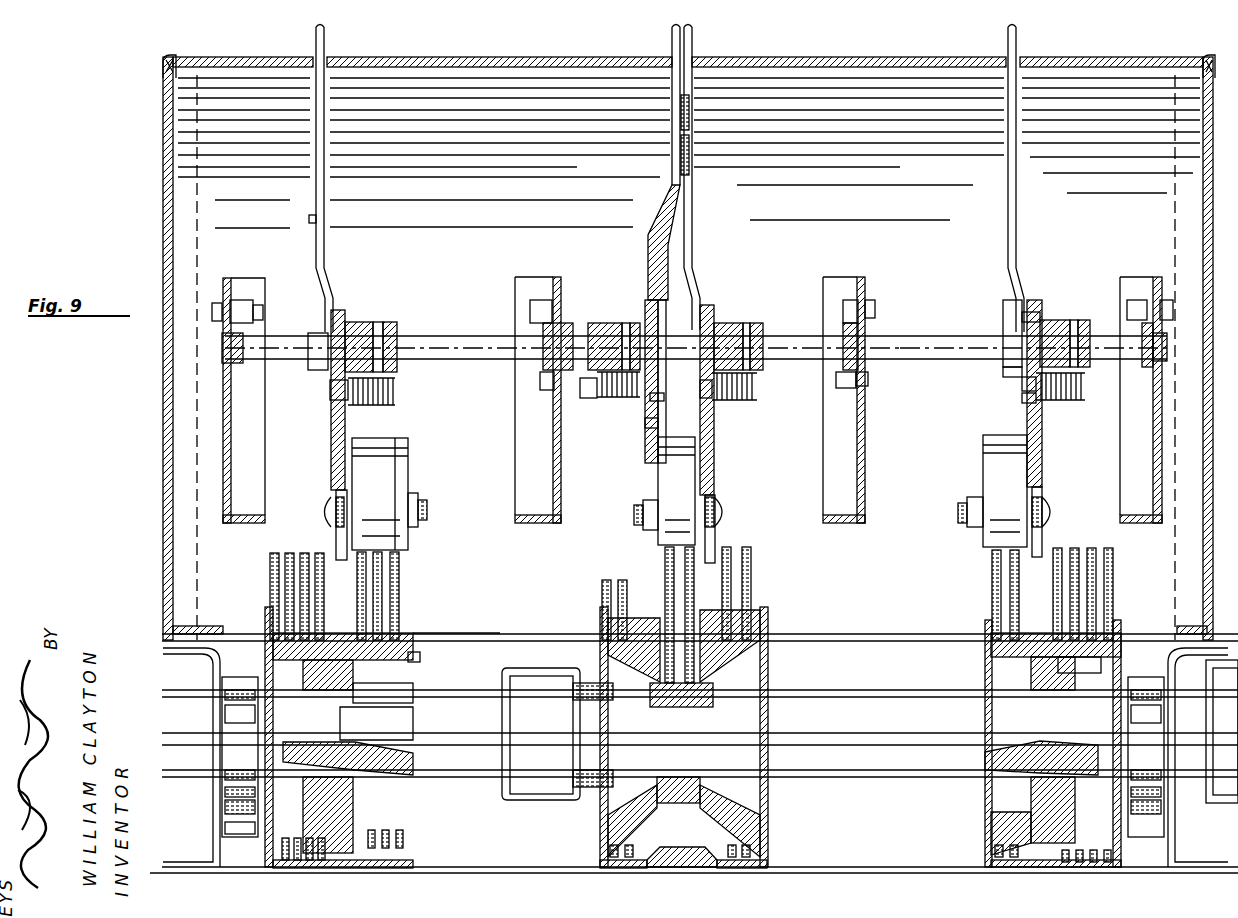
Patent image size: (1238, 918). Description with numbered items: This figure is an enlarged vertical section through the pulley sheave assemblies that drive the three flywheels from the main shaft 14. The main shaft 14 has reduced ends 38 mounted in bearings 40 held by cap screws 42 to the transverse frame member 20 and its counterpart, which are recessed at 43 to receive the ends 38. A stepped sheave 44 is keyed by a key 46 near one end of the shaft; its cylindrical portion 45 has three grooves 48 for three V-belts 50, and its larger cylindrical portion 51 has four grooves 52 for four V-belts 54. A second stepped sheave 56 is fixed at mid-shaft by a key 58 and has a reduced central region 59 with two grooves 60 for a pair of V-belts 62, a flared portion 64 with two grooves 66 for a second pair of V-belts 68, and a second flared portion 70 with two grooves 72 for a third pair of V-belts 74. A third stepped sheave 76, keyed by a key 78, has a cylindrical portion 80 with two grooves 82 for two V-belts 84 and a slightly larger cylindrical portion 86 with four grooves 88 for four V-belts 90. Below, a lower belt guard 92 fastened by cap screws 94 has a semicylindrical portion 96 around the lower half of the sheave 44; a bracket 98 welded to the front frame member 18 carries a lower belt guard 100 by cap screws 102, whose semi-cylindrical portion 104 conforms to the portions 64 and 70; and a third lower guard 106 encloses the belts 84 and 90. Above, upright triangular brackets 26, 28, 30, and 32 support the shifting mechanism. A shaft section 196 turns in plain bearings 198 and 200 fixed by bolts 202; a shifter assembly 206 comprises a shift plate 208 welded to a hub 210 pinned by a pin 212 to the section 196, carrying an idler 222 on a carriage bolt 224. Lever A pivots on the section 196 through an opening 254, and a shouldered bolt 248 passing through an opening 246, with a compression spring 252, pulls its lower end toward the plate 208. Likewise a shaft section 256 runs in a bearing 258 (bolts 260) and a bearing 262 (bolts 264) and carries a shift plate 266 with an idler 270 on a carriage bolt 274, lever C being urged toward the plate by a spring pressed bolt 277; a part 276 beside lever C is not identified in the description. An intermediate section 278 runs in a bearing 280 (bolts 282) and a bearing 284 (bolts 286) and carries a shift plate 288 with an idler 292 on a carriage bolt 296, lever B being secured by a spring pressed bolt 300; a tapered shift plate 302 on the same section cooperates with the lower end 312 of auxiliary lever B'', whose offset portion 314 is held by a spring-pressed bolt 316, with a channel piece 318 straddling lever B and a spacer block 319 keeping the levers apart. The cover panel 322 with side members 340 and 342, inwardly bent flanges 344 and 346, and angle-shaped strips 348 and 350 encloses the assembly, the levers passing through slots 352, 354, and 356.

The main shaft 14 is at (453, 778).
The front frame member 18 is at (470, 874).
The transverse frame member 20 is at (223, 834).
The bracket 26 is at (1132, 278).
The bracket 28 is at (840, 278).
The bracket 30 is at (522, 278).
The bracket 32 is at (225, 280).
The reduced ends 38 is at (303, 703).
The bearings 40 is at (240, 677).
The cap screws 42 is at (225, 808).
The recess 43 is at (170, 652).
The stepped sheave 44 is at (371, 691).
The cylindrical portion 45 is at (416, 662).
The key 46 is at (323, 745).
The grooves 48 is at (399, 830).
The V-belts 50 is at (400, 590).
The cylindrical portion 51 is at (300, 663).
The grooves 52 is at (321, 838).
The V-belts 54 is at (319, 554).
The second stepped sheave 56 is at (725, 692).
The key 58 is at (678, 708).
The central region 59 is at (712, 673).
The grooves 60 is at (677, 777).
The V-belts 62 is at (668, 580).
The flared portion 64 is at (610, 821).
The grooves 66 is at (622, 846).
The V-belts 68 is at (605, 582).
The second flared portion 70 is at (740, 808).
The grooves 72 is at (750, 833).
The V-belts 74 is at (746, 548).
The third stepped sheave 76 is at (1021, 671).
The key 78 is at (1052, 745).
The cylindrical portion 80 is at (1005, 812).
The grooves 82 is at (995, 842).
The V-belts 84 is at (991, 572).
The cylindrical portion 86 is at (1095, 660).
The grooves 88 is at (1107, 850).
The V-belts 90 is at (1108, 549).
The lower belt guard 92 is at (262, 870).
The cap screws 94 is at (225, 728).
The semicylindrical portion 96 is at (413, 866).
The bracket 98 is at (540, 668).
The lower belt guard 100 is at (767, 620).
The cap screws 102 is at (573, 706).
The semi-cylindrical portion 104 is at (680, 863).
The third lower guard 106 is at (976, 622).
The shaft section 196 is at (922, 336).
The plain bearing 198 is at (1142, 345).
The plain bearing 200 is at (859, 360).
The bolts 202 is at (1127, 300).
The shifter assembly 206 is at (1003, 380).
The shift plate 208 is at (1042, 446).
The hub 210 is at (1050, 312).
The pin 212 is at (1120, 312).
The idler 222 is at (986, 452).
The carriage bolt 224 is at (968, 506).
The opening 246 is at (1022, 400).
The shouldered bolt 248 is at (1021, 385).
The compression spring 252 is at (1058, 401).
The opening 254 is at (1040, 332).
The shaft section 256 is at (430, 336).
The bearing 258 is at (545, 300).
The bolts 260 is at (568, 322).
The bearing 262 is at (245, 300).
The bolts 264 is at (258, 308).
The shift plate 266 is at (331, 455).
The idler 270 is at (398, 440).
The carriage bolt 274 is at (421, 498).
The rod 276 is at (325, 230).
The spring pressed bolt 277 is at (330, 390).
The intermediate section 278 is at (800, 336).
The bearing 280 is at (838, 384).
The bolts 282 is at (864, 386).
The bearing 284 is at (608, 394).
The bolts 286 is at (540, 380).
The shift plate 288 is at (714, 428).
The idler 292 is at (658, 467).
The carriage bolt 296 is at (720, 506).
The spring pressed bolt 300 is at (758, 390).
The shift plate 302 is at (645, 436).
The lower end 312 is at (657, 400).
The offset portion 314 is at (668, 216).
The spring-pressed bolt 316 is at (645, 424).
The channel piece 318 is at (690, 112).
The spacer block 319 is at (690, 174).
The cover panel 322 is at (255, 60).
The side member 340 is at (1206, 184).
The side member 342 is at (170, 170).
The inwardly bent flange 344 is at (200, 630).
The inwardly bent flange 346 is at (1180, 627).
The angle-shaped molding strip 348 is at (1209, 57).
The angle-shaped strip 350 is at (164, 66).
The slot 352 is at (1010, 254).
The slot 354 is at (658, 300).
The slot 356 is at (310, 219).